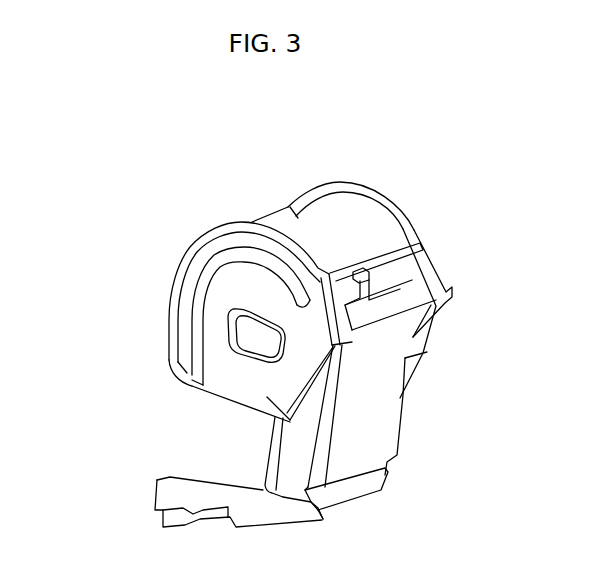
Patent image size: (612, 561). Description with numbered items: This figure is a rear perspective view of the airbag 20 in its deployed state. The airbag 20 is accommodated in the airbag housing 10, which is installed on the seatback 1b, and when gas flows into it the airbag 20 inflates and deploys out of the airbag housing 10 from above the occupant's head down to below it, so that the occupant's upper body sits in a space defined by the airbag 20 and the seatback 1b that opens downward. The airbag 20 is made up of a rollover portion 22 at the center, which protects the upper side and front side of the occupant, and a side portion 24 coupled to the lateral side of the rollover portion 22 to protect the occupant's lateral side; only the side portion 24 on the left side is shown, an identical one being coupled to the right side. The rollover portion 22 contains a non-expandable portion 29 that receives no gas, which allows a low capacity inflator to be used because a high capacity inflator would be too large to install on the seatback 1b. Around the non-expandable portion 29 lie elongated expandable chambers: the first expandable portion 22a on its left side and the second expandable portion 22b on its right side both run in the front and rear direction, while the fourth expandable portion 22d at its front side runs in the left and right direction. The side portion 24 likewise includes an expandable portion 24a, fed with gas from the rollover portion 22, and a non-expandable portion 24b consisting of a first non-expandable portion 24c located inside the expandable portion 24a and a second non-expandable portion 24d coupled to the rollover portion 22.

The airbag 20 is at (217, 165).
The rollover portion 22 is at (372, 216).
The first expandable portion 22a is at (191, 246).
The second expandable portion 22b is at (343, 191).
The fourth expandable portion 22d is at (192, 384).
The non-expandable portion 29 is at (288, 207).
The airbag housing 10 is at (395, 283).
The side portion 24 is at (236, 384).
The expandable portion 24a is at (268, 398).
The non-expandable portion 24b is at (67, 269).
The first non-expandable portion 24c is at (247, 338).
The second non-expandable portion 24d is at (198, 302).
The seatback 1b is at (368, 422).